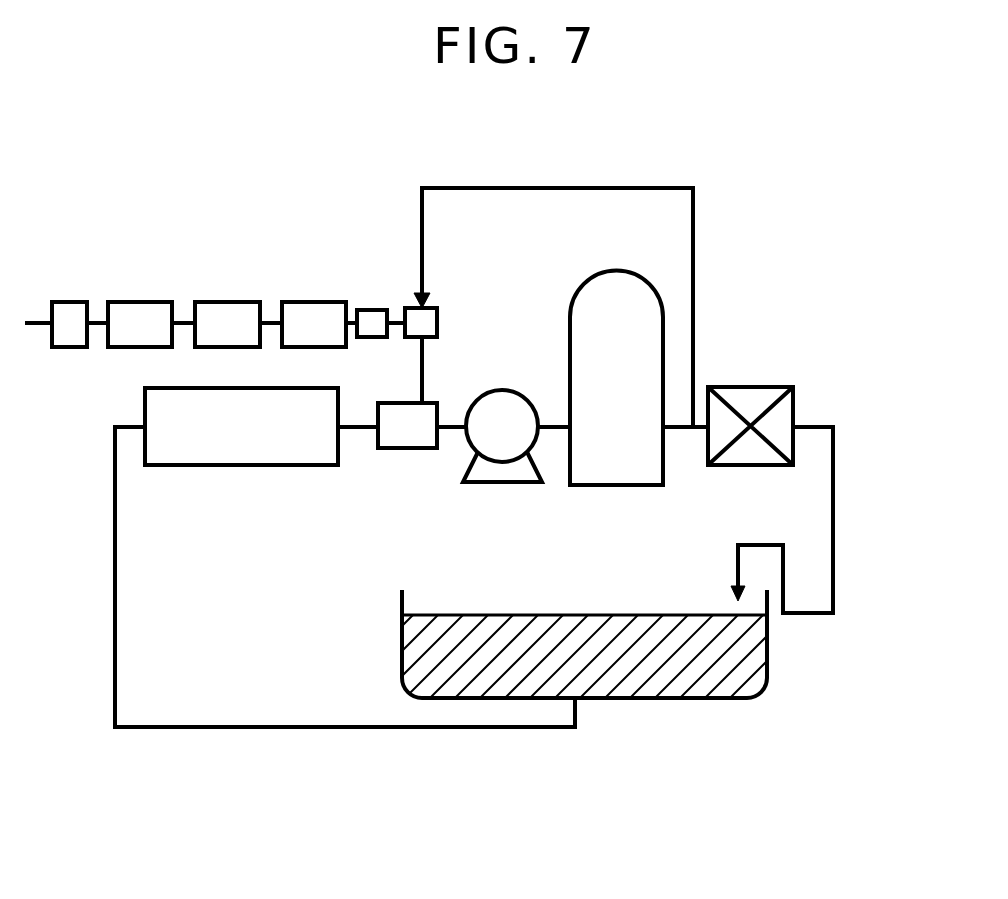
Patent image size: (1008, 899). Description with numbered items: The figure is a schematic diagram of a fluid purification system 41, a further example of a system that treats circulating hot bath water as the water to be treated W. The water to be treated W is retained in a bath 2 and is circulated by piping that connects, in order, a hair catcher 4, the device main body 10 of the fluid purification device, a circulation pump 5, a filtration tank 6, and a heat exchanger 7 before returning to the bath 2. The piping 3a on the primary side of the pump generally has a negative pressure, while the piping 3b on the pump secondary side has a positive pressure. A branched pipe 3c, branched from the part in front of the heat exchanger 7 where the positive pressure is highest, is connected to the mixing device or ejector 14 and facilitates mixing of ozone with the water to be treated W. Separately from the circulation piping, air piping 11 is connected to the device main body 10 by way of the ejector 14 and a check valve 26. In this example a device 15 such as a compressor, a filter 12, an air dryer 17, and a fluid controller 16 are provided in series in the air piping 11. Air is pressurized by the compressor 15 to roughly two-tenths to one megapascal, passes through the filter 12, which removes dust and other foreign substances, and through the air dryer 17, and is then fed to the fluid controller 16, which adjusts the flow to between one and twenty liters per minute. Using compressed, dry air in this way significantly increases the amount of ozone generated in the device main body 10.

The bath 2 is at (592, 668).
The piping 3a is at (118, 560).
The piping 3b is at (835, 518).
The branched pipe 3c is at (565, 188).
The hair catcher 4 is at (158, 388).
The circulation pump 5 is at (500, 390).
The filtration tank 6 is at (630, 272).
The heat exchanger 7 is at (738, 387).
The device main body 10 is at (380, 403).
The air piping 11 is at (393, 323).
The filter 12 is at (138, 302).
The ejector 14 is at (413, 310).
The compressor 15 is at (70, 302).
The fluid controller 16 is at (313, 323).
The air dryer 17 is at (240, 323).
The check valve 26 is at (365, 310).
The fluid purification system 41 is at (524, 291).
The water to be treated W is at (488, 630).